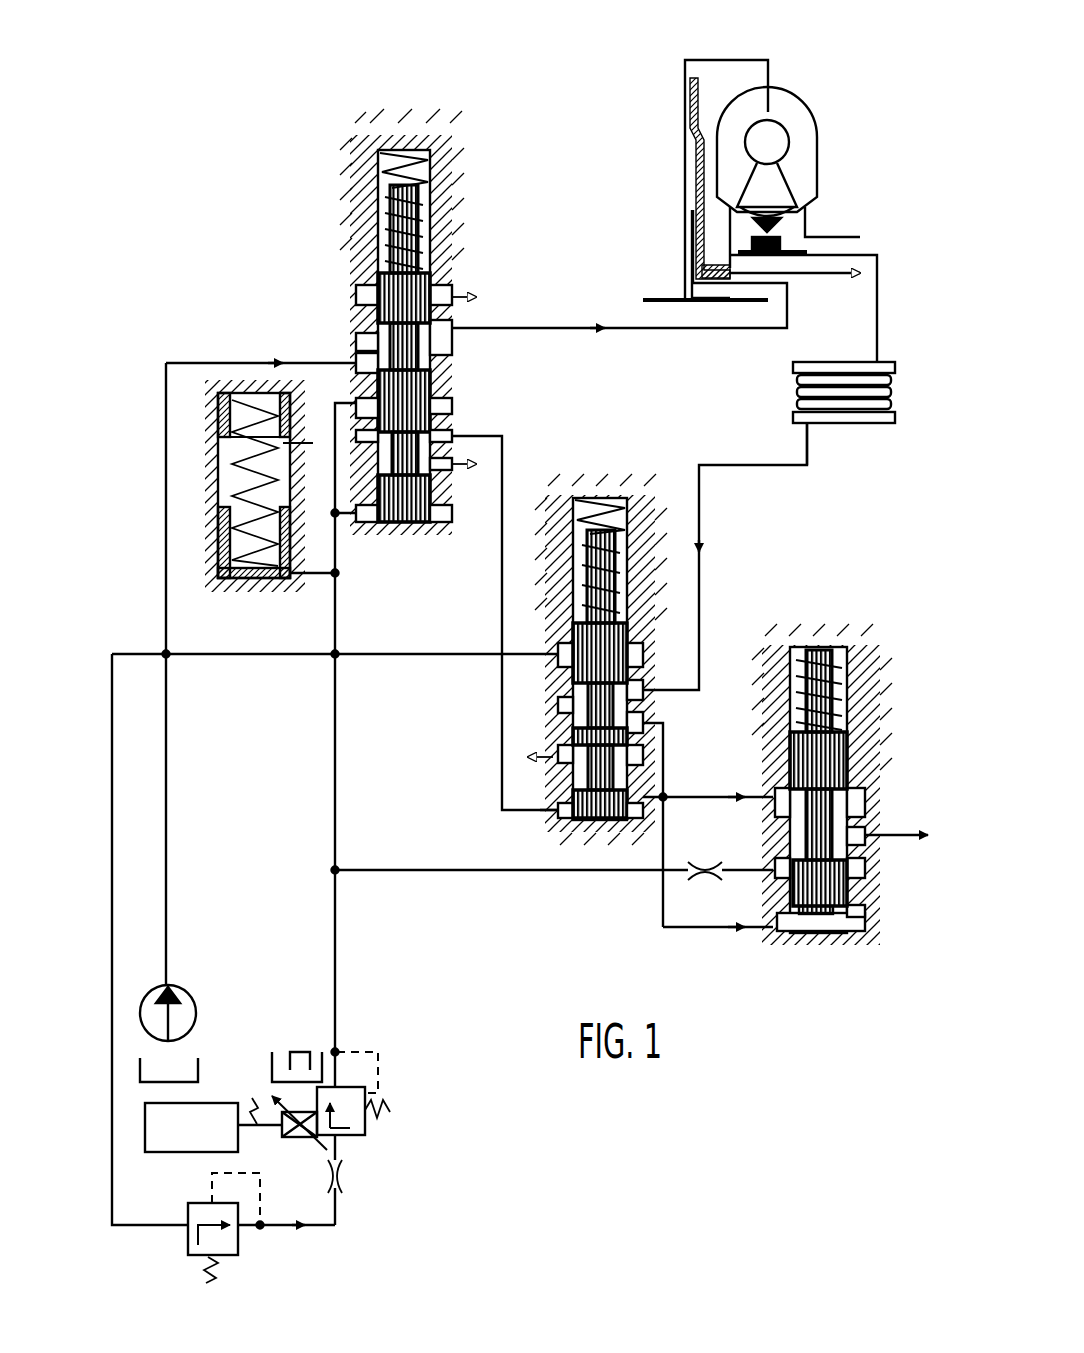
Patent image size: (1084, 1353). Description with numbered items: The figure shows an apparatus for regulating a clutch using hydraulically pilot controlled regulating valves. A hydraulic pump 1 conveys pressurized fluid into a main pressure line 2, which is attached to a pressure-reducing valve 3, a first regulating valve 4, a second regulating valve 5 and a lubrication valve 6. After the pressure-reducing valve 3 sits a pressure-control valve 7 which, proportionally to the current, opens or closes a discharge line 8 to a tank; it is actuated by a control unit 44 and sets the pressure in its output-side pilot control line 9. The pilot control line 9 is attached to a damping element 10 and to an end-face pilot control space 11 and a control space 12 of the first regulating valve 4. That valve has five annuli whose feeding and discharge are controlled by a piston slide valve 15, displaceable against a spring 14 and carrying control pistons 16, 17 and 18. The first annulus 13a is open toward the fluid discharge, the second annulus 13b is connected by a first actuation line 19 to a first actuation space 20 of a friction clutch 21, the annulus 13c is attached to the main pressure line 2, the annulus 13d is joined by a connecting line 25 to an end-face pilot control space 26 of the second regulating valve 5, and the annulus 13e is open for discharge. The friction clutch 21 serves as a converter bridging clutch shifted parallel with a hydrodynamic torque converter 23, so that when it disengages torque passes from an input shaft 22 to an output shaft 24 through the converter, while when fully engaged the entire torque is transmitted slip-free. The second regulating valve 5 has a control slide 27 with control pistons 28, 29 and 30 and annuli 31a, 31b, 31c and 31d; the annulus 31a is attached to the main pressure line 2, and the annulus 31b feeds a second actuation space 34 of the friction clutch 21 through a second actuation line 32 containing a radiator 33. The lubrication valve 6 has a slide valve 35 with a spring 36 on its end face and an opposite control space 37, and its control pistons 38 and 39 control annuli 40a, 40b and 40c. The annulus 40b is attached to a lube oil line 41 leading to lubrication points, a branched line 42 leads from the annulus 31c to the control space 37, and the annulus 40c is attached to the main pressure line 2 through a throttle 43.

The hydraulic pump 1 is at (185, 1013).
The main pressure line 2 is at (166, 783).
The pressure-reducing valve 3 is at (235, 1245).
The first regulating valve 4 is at (427, 301).
The second regulating valve 5 is at (611, 639).
The lubrication valve 6 is at (840, 767).
The pressure-control valve 7 is at (365, 1130).
The discharge line 8 is at (298, 1052).
The pilot control line 9 is at (335, 760).
The damping element 10 is at (218, 580).
The end-face pilot control space 11 is at (445, 522).
The control space 12 is at (452, 406).
The first annulus 13a is at (366, 295).
The second annulus 13b is at (456, 325).
The annulus 13c is at (452, 350).
The annulus 13d is at (455, 440).
The annulus 13e is at (458, 470).
The spring 14 is at (432, 150).
The piston slide valve 15 is at (362, 343).
The control piston 16 is at (410, 290).
The control piston 17 is at (395, 410).
The control piston 18 is at (400, 522).
The first actuation line 19 is at (680, 330).
The first actuation space 20 is at (693, 170).
The friction clutch 21 is at (697, 95).
The input shaft 22 is at (650, 300).
The hydrodynamic torque converter 23 is at (770, 142).
The output shaft 24 is at (877, 255).
The connecting line 25 is at (502, 700).
The end-face pilot control space 26 is at (560, 818).
The control slide 27 is at (562, 702).
The control piston 28 is at (592, 650).
The control piston 29 is at (640, 735).
The control piston 30 is at (556, 812).
The annulus 31a is at (640, 660).
The annulus 31b is at (640, 690).
The annulus 31c is at (558, 750).
The annulus 31d is at (638, 790).
The second actuation line 32 is at (702, 520).
The radiator 33 is at (850, 423).
The second actuation space 34 is at (720, 270).
The slide valve 35 is at (830, 800).
The spring 36 is at (850, 650).
The control space 37 is at (840, 935).
The control piston 38 is at (842, 745).
The control piston 39 is at (785, 935).
The annulus 40a is at (780, 805).
The annulus 40b is at (855, 840).
The annulus 40c is at (858, 880).
The lube oil line 41 is at (888, 833).
The branched line 42 is at (663, 852).
The throttle 43 is at (665, 900).
The control unit 44 is at (210, 1122).